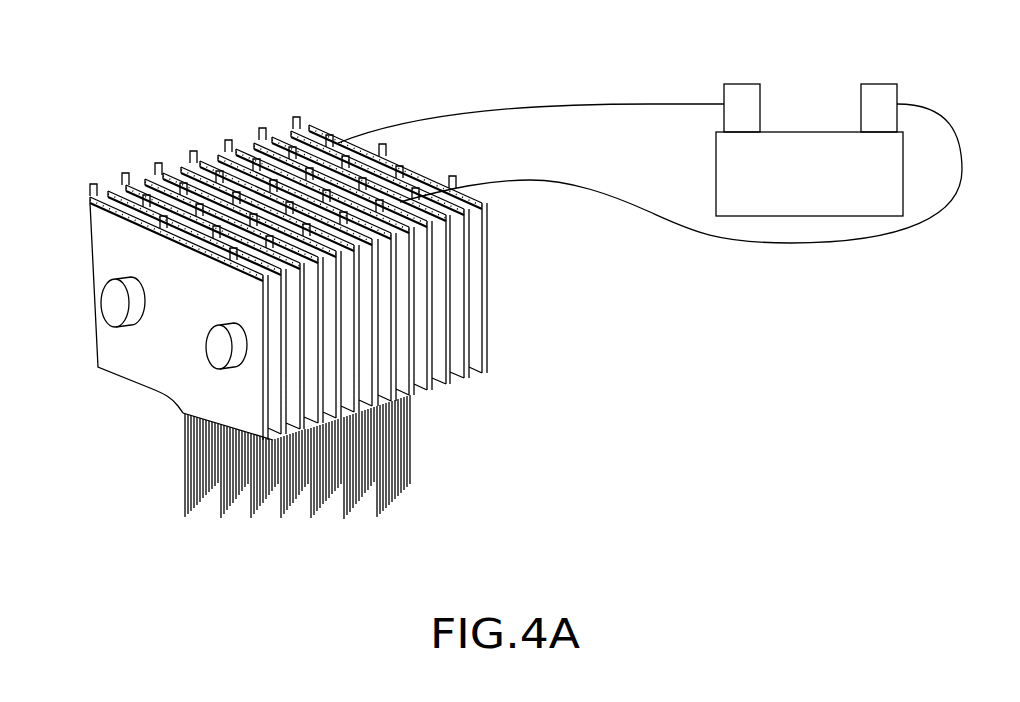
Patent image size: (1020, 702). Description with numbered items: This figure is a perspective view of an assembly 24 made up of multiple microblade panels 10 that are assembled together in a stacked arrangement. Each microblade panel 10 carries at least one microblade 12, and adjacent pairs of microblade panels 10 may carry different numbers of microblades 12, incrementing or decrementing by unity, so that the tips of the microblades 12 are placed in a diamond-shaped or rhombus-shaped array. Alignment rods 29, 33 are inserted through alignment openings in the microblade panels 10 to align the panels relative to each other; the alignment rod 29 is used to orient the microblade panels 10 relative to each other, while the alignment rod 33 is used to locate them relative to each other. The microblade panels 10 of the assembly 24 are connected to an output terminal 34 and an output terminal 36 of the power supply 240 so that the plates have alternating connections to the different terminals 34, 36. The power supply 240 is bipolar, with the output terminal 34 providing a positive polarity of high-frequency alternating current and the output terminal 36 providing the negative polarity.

The microblade panel 10 is at (93, 184).
The microblade 12 is at (193, 522).
The assembly 24 is at (446, 164).
The alignment rod 29 is at (212, 346).
The alignment rod 33 is at (108, 302).
The output terminal 34 is at (742, 84).
The output terminal 36 is at (878, 84).
The power supply 240 is at (832, 187).